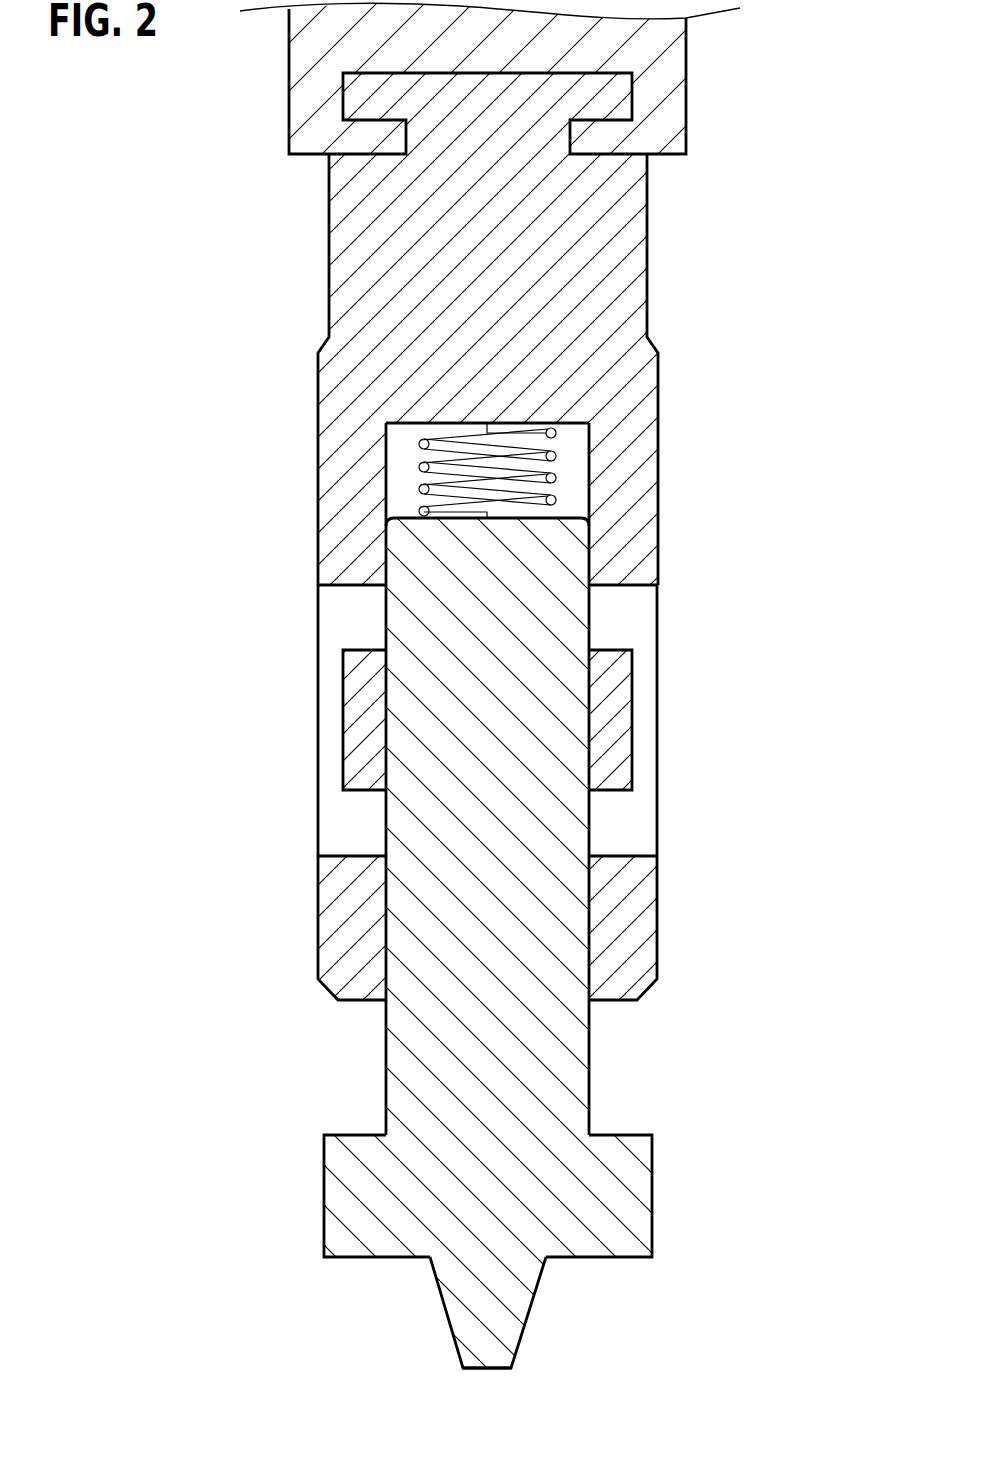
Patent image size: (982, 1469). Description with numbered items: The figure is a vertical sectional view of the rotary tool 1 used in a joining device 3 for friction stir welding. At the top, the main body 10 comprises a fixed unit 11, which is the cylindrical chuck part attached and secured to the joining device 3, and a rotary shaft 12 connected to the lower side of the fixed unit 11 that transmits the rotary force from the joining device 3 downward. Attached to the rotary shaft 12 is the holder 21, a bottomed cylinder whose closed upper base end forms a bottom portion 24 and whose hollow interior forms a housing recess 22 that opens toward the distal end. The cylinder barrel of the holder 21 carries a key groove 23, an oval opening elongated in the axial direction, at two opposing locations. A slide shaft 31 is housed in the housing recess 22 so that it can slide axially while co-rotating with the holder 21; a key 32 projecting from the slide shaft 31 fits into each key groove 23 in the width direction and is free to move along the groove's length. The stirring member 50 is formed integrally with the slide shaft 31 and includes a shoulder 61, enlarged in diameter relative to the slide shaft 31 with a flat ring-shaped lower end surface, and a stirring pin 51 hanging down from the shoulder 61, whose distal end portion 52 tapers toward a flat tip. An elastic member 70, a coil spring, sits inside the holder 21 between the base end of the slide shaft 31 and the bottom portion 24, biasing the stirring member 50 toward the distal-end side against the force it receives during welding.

The rotary tool 1 is at (511, 723).
The joining device 3 is at (307, 59).
The main body 10 is at (511, 604).
The fixed unit 11 is at (463, 135).
The rotary shaft 12 is at (640, 196).
The holder 21 is at (347, 910).
The housing recess 22 is at (600, 919).
The key groove 23 is at (353, 590).
The bottom portion 24 is at (418, 387).
The slide shaft 31 is at (419, 945).
The key 32 is at (360, 700).
The stirring member 50 is at (419, 1254).
The stirring pin 51 is at (457, 1284).
The distal end portion 52 is at (473, 1338).
The shoulder 61 is at (357, 1192).
The elastic member 70 is at (556, 500).